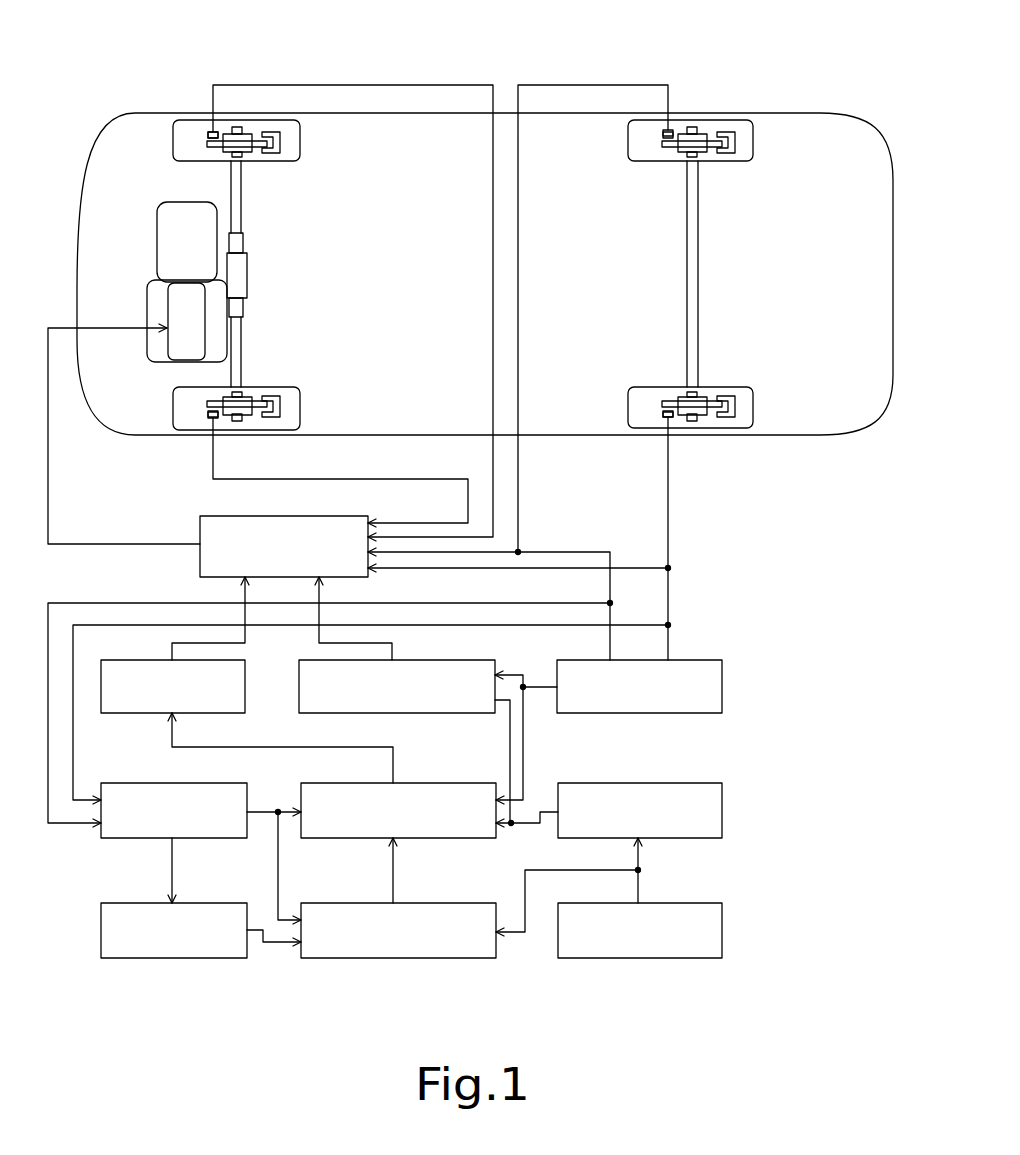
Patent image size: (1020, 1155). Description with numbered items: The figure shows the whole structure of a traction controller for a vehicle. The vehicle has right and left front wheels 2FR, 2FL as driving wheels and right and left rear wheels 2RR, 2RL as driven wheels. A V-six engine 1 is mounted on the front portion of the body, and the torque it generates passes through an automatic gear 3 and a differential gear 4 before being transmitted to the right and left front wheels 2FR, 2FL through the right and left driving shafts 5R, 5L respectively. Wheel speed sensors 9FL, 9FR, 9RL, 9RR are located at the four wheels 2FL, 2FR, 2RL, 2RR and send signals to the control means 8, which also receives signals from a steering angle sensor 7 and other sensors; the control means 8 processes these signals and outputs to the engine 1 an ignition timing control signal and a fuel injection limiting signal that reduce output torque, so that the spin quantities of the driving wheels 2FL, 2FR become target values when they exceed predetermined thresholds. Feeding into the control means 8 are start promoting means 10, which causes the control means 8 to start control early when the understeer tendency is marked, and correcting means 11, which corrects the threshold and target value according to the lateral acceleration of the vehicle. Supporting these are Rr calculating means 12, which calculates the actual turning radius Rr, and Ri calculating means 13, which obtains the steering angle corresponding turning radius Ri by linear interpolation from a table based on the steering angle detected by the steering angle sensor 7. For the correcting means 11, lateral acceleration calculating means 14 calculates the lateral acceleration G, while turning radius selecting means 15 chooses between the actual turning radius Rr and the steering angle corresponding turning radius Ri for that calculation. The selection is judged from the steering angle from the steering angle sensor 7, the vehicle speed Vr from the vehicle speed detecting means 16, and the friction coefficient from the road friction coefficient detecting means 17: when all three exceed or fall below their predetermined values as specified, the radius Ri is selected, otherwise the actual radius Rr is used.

The engine 1 is at (110, 415).
The right front wheel 2FR is at (175, 124).
The left front wheel 2FL is at (173, 403).
The right rear wheel 2RR is at (757, 133).
The left rear wheel 2RL is at (757, 413).
The automatic gear 3 is at (157, 223).
The differential gear 4 is at (250, 273).
The right driving shaft 5R is at (246, 192).
The left driving shaft 5L is at (246, 345).
The steering angle sensor 7 is at (722, 931).
The control means 8 is at (200, 562).
The wheel speed sensor 9FR is at (208, 133).
The wheel speed sensor 9FL is at (208, 418).
The wheel speed sensor 9RR is at (670, 130).
The wheel speed sensor 9RL is at (670, 418).
The start promoting means 10 is at (408, 713).
The correcting means 11 is at (137, 713).
The Rr calculating means 12 is at (722, 688).
The Ri calculating means 13 is at (722, 809).
The lateral acceleration calculating means 14 is at (408, 838).
The turning radius selecting means 15 is at (408, 958).
The vehicle speed detecting means 16 is at (140, 838).
The road friction coefficient detecting means 17 is at (140, 958).